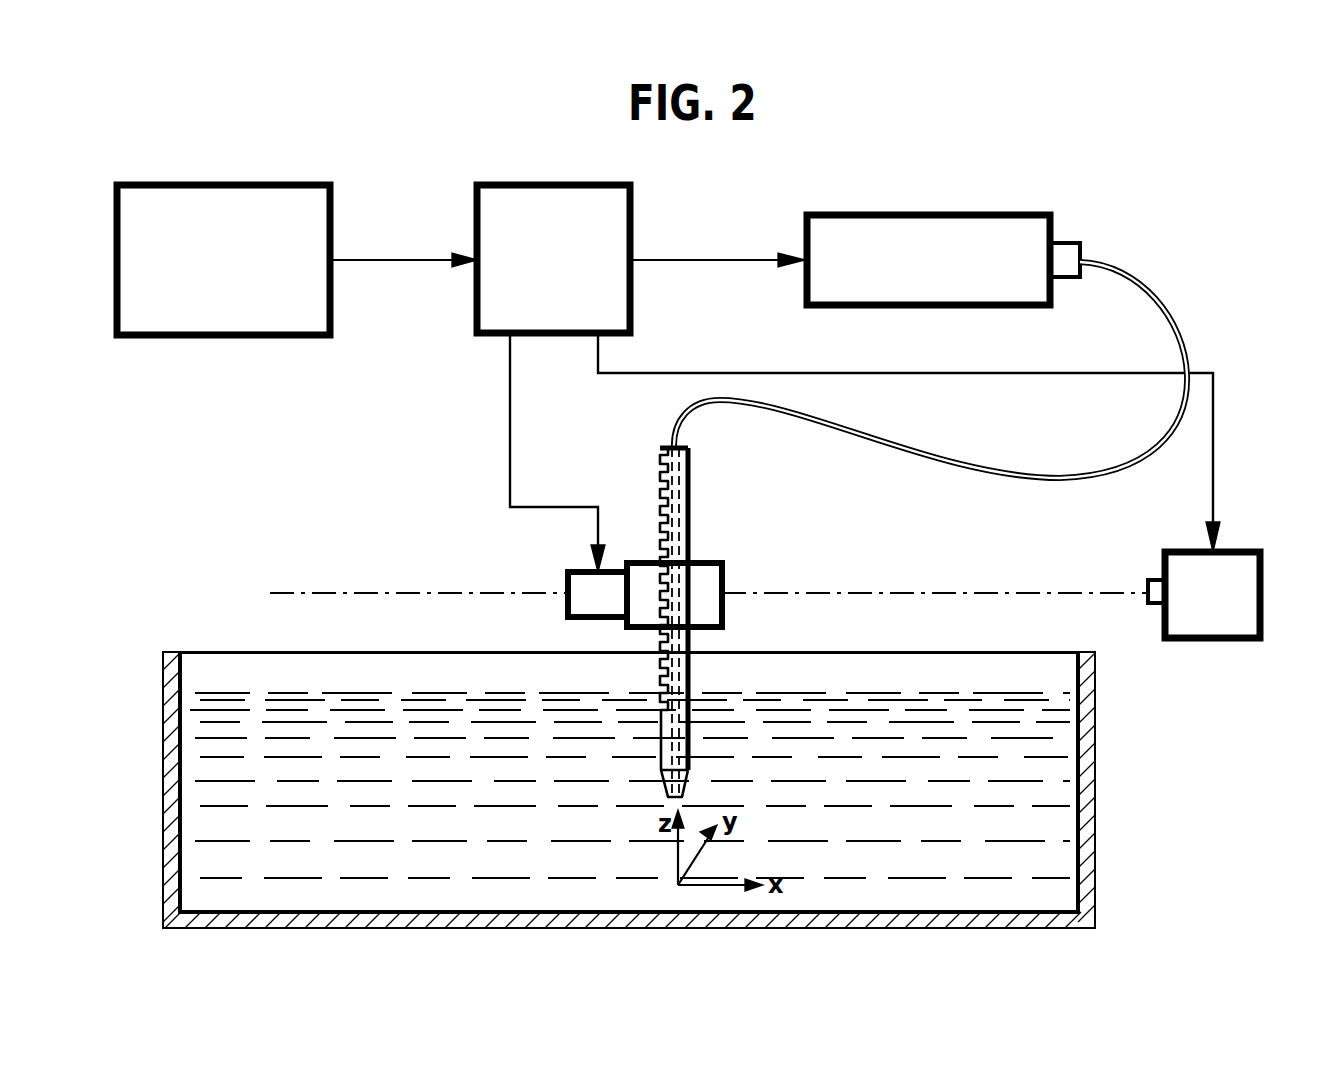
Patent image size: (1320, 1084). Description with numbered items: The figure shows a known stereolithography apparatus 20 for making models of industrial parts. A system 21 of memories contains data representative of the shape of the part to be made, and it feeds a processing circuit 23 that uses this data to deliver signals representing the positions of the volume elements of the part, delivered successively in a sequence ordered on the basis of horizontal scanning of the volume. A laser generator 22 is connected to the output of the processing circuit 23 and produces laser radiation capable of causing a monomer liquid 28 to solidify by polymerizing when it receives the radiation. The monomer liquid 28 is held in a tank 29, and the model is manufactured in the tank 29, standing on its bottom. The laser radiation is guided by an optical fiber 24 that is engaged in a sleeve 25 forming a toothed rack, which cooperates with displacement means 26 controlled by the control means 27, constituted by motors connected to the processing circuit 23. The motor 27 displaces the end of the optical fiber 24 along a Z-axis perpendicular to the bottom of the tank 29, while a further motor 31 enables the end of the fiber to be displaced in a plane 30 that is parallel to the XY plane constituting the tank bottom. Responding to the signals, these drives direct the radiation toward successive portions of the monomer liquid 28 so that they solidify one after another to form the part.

The stereolithography apparatus 20 is at (1138, 237).
The system of memories 21 is at (153, 207).
The laser generator 22 is at (995, 228).
The processing circuit 23 is at (514, 212).
The optical fiber 24 is at (1180, 322).
The sleeve 25 is at (690, 518).
The displacement means 26 is at (722, 580).
The control means 27 is at (566, 576).
The monomer liquid 28 is at (1100, 858).
The tank 29 is at (167, 758).
The plane 30 is at (372, 592).
The motor 31 is at (1222, 625).